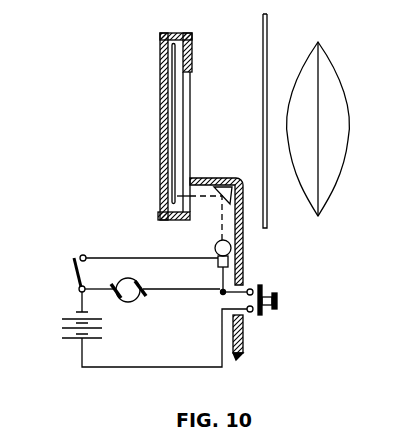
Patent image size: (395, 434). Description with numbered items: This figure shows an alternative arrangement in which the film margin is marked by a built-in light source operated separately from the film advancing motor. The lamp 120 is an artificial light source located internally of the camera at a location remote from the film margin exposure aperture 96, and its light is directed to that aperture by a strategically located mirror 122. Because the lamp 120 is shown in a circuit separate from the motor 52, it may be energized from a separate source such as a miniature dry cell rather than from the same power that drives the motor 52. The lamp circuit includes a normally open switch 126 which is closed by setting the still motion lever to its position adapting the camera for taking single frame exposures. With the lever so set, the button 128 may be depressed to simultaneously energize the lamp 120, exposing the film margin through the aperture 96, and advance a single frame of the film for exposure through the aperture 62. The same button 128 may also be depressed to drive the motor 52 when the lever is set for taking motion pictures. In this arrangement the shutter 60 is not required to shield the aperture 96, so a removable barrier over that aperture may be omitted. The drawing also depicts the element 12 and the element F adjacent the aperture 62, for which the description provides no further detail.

The leaf 12 is at (340, 98).
The film motor 52 is at (135, 302).
The shutter 60 is at (268, 40).
The aperture 62 is at (190, 110).
The aperture 96 is at (190, 204).
The lamp 120 is at (233, 249).
The mirror 122 is at (240, 177).
The switch 126 is at (72, 268).
The button 128 is at (279, 296).
The fiber F is at (176, 86).